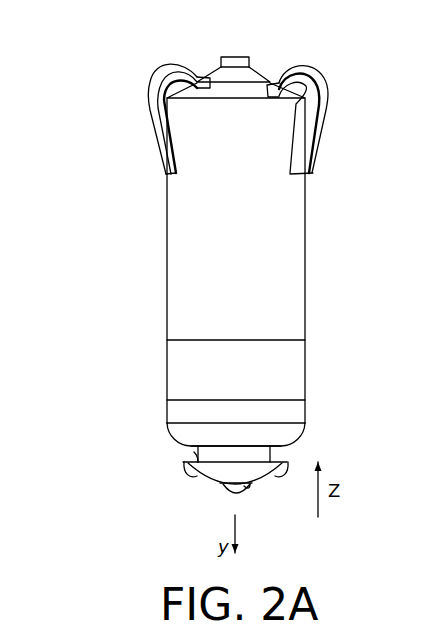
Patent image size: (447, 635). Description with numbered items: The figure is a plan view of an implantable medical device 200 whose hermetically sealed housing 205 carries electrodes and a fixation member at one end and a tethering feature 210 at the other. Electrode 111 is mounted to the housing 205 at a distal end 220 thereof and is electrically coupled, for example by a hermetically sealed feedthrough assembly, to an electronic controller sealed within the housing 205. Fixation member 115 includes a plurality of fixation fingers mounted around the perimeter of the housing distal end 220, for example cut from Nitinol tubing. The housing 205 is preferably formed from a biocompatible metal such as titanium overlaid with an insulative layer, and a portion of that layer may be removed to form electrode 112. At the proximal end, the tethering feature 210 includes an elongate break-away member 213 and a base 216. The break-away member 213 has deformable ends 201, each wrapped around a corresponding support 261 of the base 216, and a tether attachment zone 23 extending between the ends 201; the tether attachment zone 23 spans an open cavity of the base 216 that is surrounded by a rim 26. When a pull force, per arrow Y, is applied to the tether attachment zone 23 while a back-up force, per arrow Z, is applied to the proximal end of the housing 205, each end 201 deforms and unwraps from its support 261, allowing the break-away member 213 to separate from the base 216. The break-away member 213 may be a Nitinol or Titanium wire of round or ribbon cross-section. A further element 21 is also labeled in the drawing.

The implantable medical device 200 is at (78, 138).
The electrode 111 is at (233, 57).
The fixation member 115 is at (333, 98).
The distal end 220 is at (195, 110).
The hermetically sealed housing 205 is at (247, 248).
The electrode 112 is at (290, 370).
The housing end portion 21 is at (298, 428).
The base 216 is at (218, 446).
The tethering feature 210 is at (122, 423).
The support 261 is at (197, 460).
The deformable end 201 is at (185, 471).
The rim 26 is at (235, 473).
The tether attachment zone 23 is at (248, 484).
The break-away member 213 is at (223, 497).